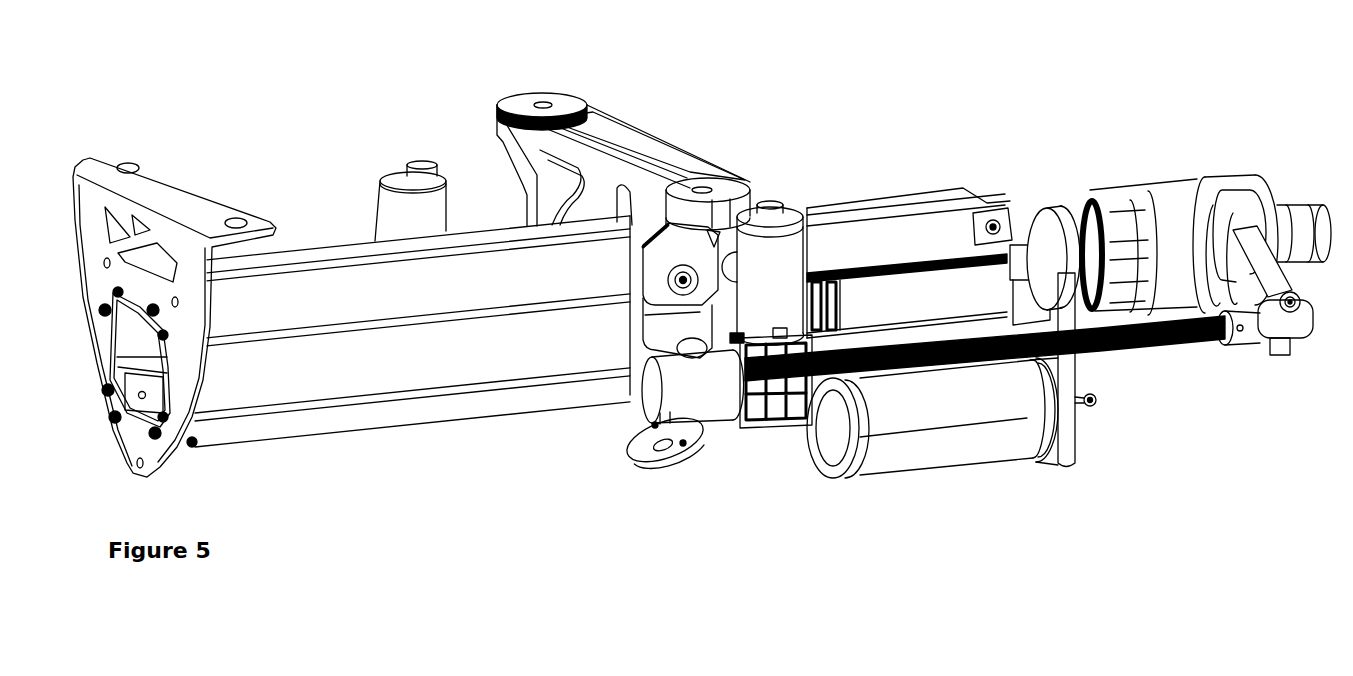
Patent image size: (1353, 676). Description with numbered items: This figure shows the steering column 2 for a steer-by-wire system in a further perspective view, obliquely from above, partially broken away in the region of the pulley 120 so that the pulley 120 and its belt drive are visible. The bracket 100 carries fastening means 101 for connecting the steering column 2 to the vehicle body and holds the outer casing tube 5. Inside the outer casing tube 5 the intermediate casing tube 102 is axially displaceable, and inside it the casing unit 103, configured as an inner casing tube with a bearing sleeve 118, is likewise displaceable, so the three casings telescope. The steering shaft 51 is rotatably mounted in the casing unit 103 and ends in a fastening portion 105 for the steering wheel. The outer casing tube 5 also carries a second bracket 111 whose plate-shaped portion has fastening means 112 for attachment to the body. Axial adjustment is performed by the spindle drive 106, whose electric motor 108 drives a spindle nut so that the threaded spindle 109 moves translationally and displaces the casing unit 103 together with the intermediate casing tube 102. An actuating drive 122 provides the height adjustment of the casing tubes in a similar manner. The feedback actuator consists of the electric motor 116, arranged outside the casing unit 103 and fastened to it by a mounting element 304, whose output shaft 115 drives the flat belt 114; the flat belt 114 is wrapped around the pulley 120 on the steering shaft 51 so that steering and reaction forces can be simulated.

The steering column 2 is at (702, 283).
The outer casing tube 5 is at (424, 370).
The steering shaft 51 is at (1020, 255).
The bracket 100 is at (616, 137).
The fastening means 101 is at (530, 100).
The intermediate casing tube 102 is at (952, 292).
The casing unit 103 is at (1170, 220).
The fastening portion 105 is at (1312, 225).
The spindle drive 106 is at (1045, 398).
The electric motor 108 is at (762, 262).
The threaded spindle 109 is at (1188, 320).
The second bracket 111 is at (188, 200).
The fastening means 112 is at (128, 163).
The flat belt 114 is at (1072, 238).
The output shaft 115 is at (1097, 400).
The electric motor 116 is at (945, 410).
The bearing sleeve 118 is at (1165, 215).
The pulley 120 is at (1048, 218).
The actuating drive 122 is at (357, 181).
The mounting element 304 is at (1060, 437).